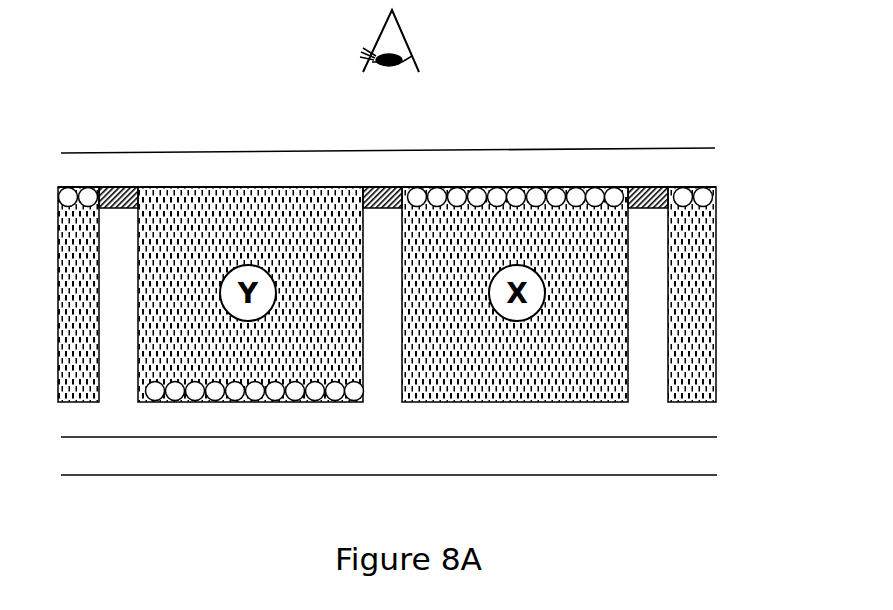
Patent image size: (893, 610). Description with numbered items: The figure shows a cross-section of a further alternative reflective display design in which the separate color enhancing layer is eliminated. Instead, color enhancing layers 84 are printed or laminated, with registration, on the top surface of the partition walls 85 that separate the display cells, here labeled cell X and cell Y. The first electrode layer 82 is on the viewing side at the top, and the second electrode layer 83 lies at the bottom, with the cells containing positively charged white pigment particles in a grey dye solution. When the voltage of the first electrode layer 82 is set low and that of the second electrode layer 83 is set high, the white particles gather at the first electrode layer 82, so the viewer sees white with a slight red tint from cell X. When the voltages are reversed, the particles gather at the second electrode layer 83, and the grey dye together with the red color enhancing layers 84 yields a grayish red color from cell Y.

The first electrode layer 82 is at (704, 165).
The second electrode layer 83 is at (650, 449).
The color enhancing layer 84 is at (117, 194).
The partition wall 85 is at (650, 297).